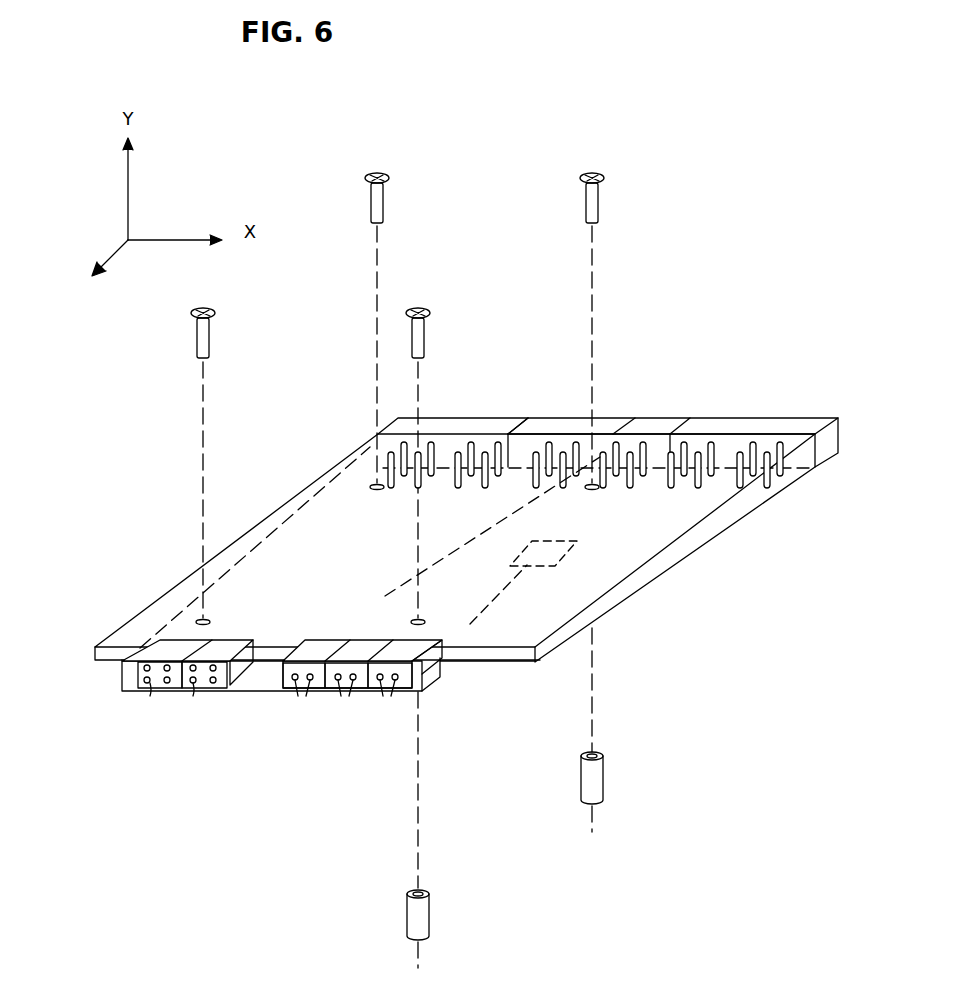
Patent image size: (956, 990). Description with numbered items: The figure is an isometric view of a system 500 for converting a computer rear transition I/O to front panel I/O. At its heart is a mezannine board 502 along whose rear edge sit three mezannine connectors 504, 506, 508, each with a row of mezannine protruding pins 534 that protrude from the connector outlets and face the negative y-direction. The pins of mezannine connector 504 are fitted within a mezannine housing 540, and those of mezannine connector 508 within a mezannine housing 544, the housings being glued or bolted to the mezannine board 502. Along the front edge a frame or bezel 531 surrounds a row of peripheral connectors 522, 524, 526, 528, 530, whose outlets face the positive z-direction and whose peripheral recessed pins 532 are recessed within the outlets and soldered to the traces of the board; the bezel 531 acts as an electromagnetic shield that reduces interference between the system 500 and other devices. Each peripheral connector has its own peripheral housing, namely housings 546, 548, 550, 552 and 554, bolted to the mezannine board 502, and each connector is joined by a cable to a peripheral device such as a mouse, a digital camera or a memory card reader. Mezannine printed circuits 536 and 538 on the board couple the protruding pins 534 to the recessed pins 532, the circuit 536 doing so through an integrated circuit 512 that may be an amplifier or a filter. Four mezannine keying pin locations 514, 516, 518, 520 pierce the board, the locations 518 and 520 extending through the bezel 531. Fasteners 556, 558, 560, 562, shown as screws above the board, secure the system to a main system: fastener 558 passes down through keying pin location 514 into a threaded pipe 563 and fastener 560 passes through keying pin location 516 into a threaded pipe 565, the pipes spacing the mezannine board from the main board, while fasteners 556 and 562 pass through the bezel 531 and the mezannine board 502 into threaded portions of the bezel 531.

The system 500 is at (626, 656).
The mezannine board 502 is at (690, 517).
The mezannine connector 504 is at (490, 422).
The mezannine connector 506 is at (617, 422).
The mezannine connector 508 is at (745, 425).
The integrated circuit 512 is at (383, 598).
The mezannine keying pin location 514 is at (374, 488).
The mezannine keying pin location 516 is at (592, 489).
The mezannine keying pin location 518 is at (476, 624).
The mezannine keying pin location 520 is at (210, 620).
The peripheral connector 522 is at (138, 680).
The peripheral connector 524 is at (215, 691).
The peripheral connector 526 is at (300, 691).
The peripheral connector 528 is at (352, 691).
The peripheral connector 530 is at (433, 665).
The bezel 531 is at (122, 676).
The peripheral recessed pin 532 is at (150, 696).
The mezannine protruding pin 534 is at (390, 462).
The mezannine printed circuit 536 is at (465, 470).
The mezannine printed circuit 538 is at (580, 520).
The mezannine housing 540 is at (511, 425).
The mezannine housing 544 is at (826, 446).
The peripheral housing 546 is at (158, 655).
The peripheral housing 548 is at (238, 647).
The peripheral housing 550 is at (323, 648).
The peripheral housing 552 is at (426, 620).
The peripheral housing 554 is at (445, 668).
The fastener 556 is at (212, 310).
The fastener 558 is at (387, 175).
The fastener 560 is at (602, 175).
The fastener 562 is at (428, 311).
The pipe 563 is at (430, 906).
The pipe 565 is at (604, 778).